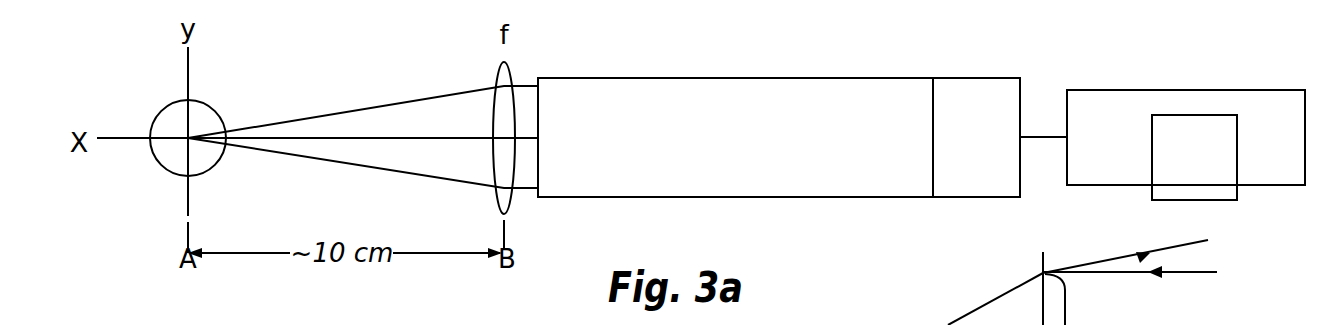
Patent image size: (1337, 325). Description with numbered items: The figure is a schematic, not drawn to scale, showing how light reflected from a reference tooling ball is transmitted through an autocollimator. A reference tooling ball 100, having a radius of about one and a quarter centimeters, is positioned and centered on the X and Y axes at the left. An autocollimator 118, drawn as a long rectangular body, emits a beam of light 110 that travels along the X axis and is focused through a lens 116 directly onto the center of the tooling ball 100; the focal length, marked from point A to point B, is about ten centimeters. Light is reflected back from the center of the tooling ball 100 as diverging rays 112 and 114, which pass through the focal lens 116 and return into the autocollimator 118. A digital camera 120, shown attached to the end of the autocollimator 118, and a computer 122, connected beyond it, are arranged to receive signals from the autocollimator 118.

The reference tooling ball 100 is at (170, 103).
The beam of light 110 is at (448, 137).
The ray 112 is at (362, 108).
The ray 114 is at (402, 175).
The lens 116 is at (505, 62).
The autocollimator 118 is at (712, 78).
The digital camera 120 is at (995, 77).
The computer 122 is at (1233, 88).